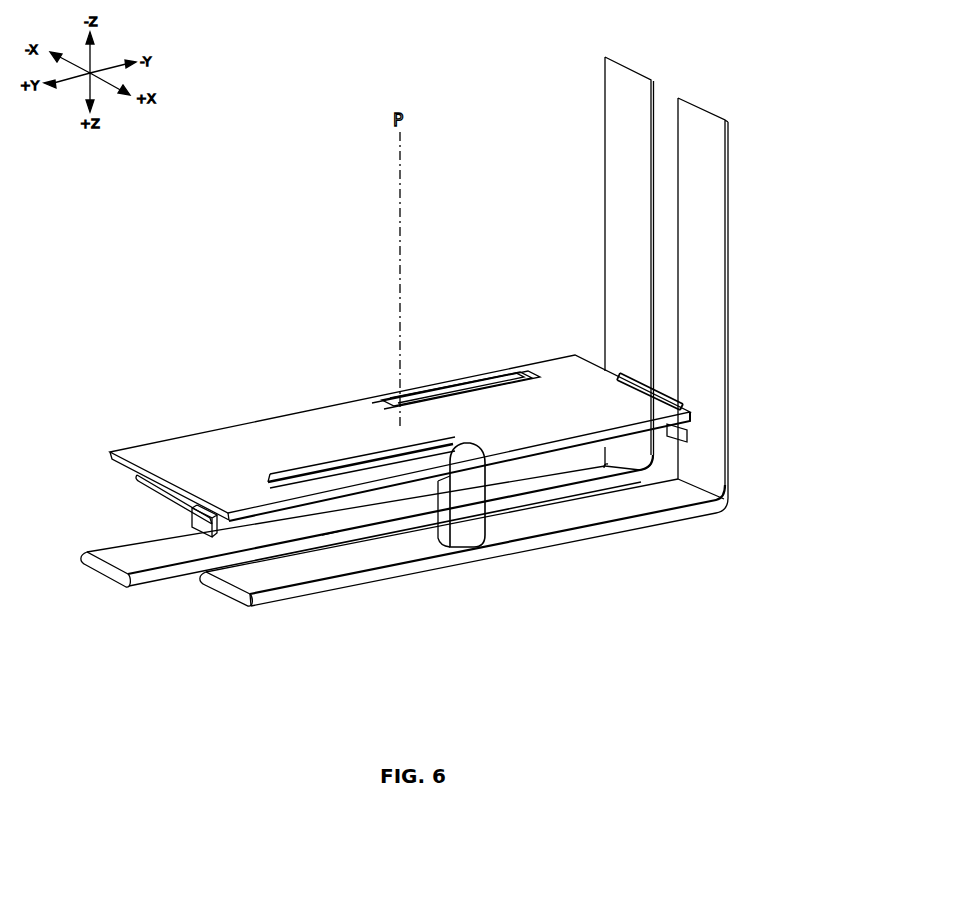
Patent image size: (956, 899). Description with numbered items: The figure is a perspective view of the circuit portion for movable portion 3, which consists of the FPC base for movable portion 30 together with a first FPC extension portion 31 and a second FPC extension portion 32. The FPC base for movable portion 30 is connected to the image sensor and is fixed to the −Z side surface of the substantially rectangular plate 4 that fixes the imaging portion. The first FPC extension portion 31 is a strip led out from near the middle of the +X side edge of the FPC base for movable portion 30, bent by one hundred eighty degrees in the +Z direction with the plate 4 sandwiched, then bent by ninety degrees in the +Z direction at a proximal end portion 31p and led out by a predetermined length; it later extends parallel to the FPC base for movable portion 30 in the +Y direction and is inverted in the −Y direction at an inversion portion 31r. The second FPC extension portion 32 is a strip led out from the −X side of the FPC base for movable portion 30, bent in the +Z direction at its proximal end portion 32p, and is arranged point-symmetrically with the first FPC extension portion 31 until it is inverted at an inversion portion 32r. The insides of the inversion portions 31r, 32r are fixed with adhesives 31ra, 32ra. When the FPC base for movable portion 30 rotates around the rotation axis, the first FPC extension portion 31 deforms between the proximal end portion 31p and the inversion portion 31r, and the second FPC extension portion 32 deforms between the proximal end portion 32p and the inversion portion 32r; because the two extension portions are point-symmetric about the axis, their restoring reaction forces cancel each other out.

The circuit portion for movable portion 3 is at (272, 402).
The plate 4 is at (356, 401).
The FPC base for movable portion 30 is at (560, 372).
The first FPC extension portion 31 is at (525, 537).
The proximal end portion 31p is at (466, 446).
The inversion portion 31r is at (226, 590).
The adhesive 31ra is at (271, 594).
The second FPC extension portion 32 is at (112, 548).
The proximal end portion 32p is at (343, 420).
The inversion portion 32r is at (593, 467).
The adhesive 32ra is at (593, 465).